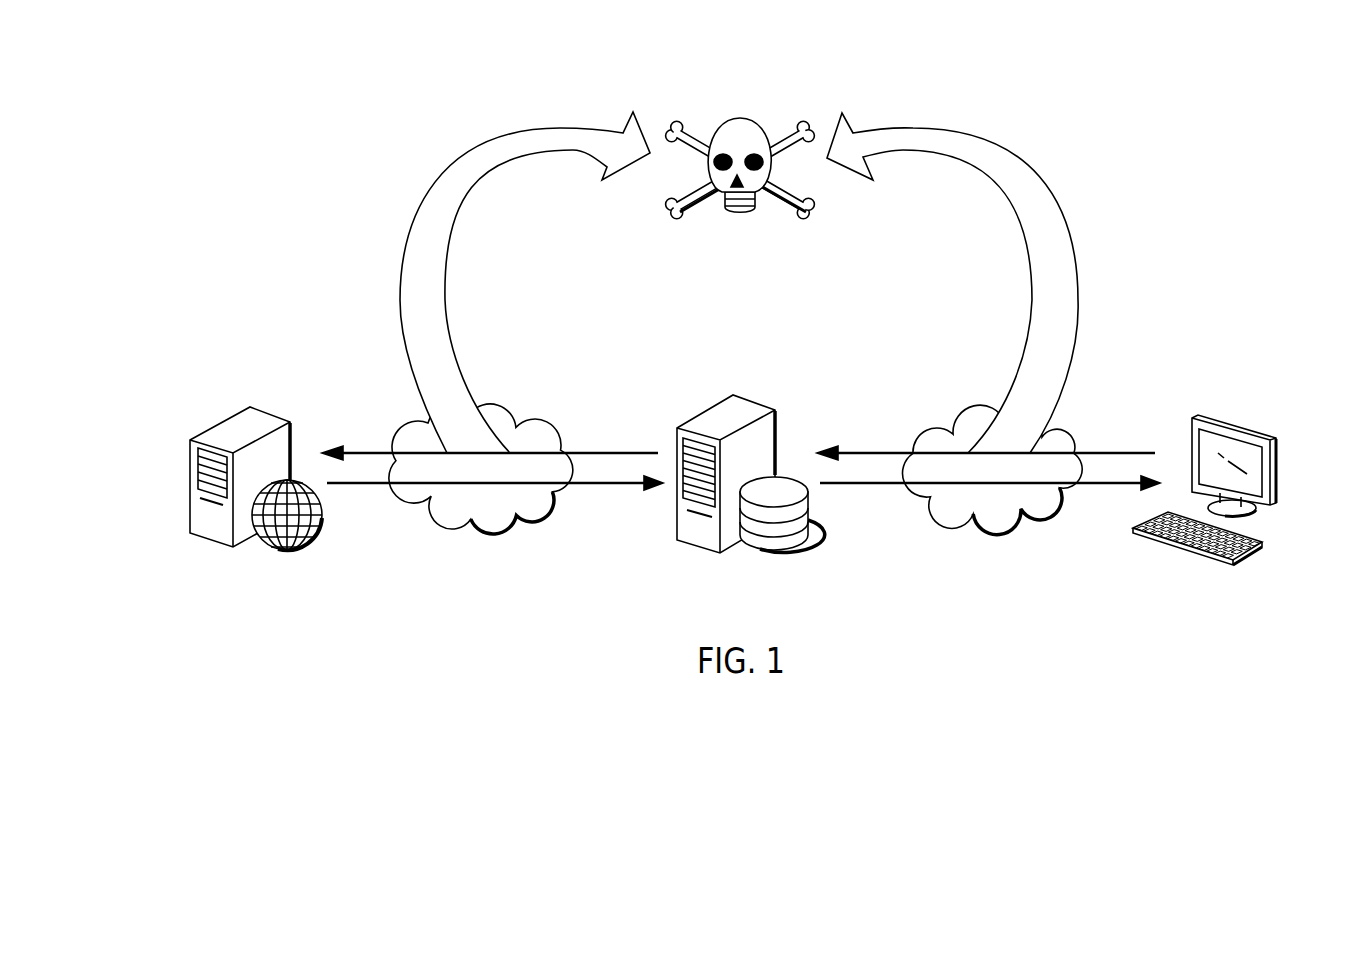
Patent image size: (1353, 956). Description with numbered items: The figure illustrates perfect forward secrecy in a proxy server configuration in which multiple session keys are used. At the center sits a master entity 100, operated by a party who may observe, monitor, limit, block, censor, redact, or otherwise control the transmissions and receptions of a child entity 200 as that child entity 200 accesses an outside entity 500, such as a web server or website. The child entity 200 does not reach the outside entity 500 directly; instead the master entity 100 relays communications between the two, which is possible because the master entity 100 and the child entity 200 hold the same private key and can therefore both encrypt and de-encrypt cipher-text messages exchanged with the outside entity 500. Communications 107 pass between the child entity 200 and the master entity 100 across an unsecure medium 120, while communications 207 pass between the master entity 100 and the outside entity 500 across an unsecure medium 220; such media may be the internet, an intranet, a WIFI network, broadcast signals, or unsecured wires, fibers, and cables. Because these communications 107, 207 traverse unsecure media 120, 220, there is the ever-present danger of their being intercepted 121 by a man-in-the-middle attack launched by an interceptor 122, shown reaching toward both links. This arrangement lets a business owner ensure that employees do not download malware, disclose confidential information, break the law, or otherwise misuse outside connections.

The master entity 100 is at (717, 418).
The communication 107 is at (870, 452).
The unsecure medium 120 is at (997, 520).
The interception 121 is at (440, 208).
The interceptor 122 is at (742, 128).
The child entity 200 is at (1243, 428).
The communication 207 is at (615, 452).
The unsecure medium 220 is at (493, 520).
The outside entity 500 is at (228, 428).